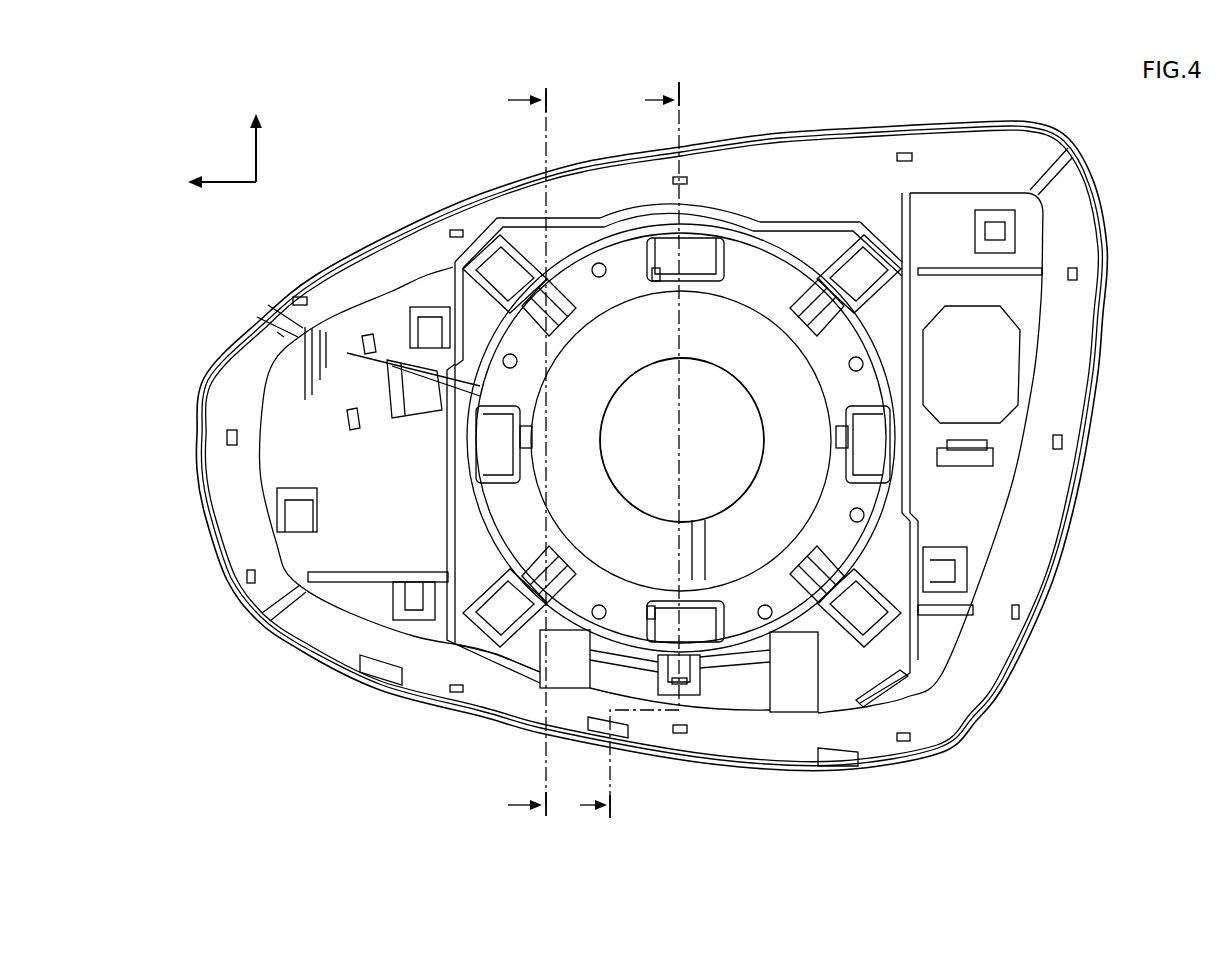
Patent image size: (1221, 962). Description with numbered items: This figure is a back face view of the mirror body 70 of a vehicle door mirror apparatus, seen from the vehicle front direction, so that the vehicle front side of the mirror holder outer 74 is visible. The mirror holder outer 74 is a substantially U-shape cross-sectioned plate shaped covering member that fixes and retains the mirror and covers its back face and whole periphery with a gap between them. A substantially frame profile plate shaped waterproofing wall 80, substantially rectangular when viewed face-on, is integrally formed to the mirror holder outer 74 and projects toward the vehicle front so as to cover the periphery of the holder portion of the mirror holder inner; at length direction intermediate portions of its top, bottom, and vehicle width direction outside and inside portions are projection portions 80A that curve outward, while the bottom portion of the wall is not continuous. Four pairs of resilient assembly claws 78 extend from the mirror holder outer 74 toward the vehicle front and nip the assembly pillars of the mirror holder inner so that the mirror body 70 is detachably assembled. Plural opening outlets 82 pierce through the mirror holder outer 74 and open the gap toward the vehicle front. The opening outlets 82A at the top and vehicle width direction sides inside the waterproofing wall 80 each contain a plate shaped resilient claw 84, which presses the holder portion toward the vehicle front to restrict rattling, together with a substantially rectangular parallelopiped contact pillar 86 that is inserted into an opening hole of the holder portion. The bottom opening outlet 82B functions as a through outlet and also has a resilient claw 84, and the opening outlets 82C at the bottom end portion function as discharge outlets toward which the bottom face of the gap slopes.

The mirror body 70 is at (348, 166).
The mirror holder outer 74 is at (742, 132).
The assembly claws 78 is at (497, 268).
The waterproofing wall 80 is at (805, 222).
The projection portions 80A is at (683, 208).
The opening outlets 82 is at (298, 297).
The opening outlets 82A is at (658, 272).
The opening outlet 82B is at (648, 606).
The opening outlets 82C is at (377, 673).
The resilient claws 84 is at (700, 272).
The contact pillar 86 is at (706, 270).